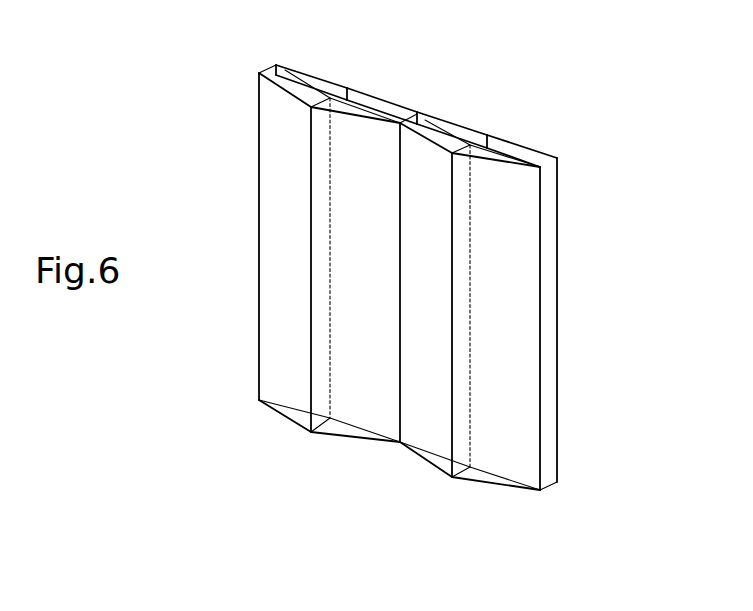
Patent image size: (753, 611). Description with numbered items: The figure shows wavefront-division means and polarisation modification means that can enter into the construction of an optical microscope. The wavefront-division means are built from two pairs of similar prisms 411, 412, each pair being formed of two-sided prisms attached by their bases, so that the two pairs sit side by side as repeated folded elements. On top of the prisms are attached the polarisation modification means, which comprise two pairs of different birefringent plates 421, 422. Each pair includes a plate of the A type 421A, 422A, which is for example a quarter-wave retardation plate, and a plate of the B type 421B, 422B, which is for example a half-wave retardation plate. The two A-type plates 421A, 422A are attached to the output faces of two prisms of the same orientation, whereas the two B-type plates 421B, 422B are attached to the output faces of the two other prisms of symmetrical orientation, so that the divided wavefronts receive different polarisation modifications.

The pair of prisms 411 is at (396, 467).
The pair of prisms 412 is at (537, 522).
The pair of birefringent plates 421 is at (279, 114).
The A-type plate 421A is at (295, 77).
The B-type plate 421B is at (378, 105).
The pair of birefringent plates 422 is at (406, 186).
The A-type plate 422A is at (447, 128).
The B-type plate 422B is at (548, 240).